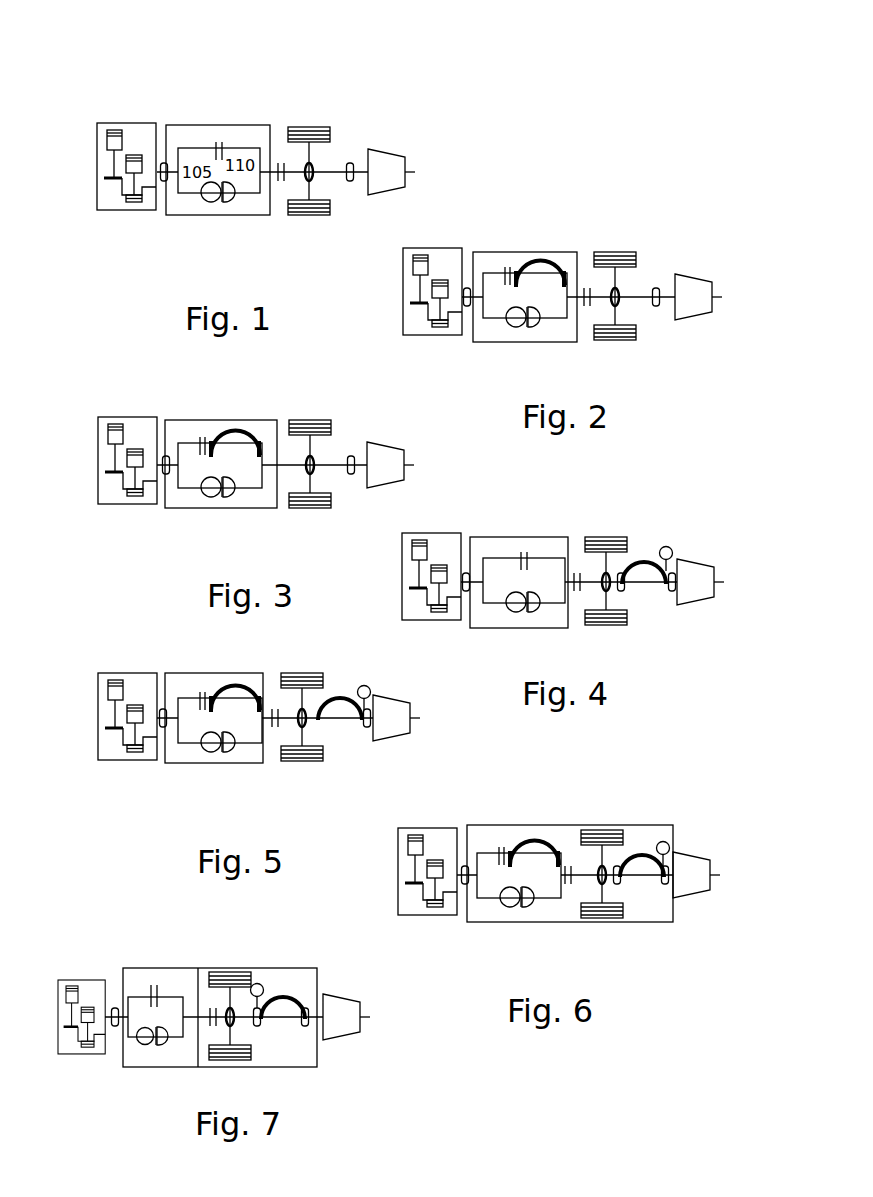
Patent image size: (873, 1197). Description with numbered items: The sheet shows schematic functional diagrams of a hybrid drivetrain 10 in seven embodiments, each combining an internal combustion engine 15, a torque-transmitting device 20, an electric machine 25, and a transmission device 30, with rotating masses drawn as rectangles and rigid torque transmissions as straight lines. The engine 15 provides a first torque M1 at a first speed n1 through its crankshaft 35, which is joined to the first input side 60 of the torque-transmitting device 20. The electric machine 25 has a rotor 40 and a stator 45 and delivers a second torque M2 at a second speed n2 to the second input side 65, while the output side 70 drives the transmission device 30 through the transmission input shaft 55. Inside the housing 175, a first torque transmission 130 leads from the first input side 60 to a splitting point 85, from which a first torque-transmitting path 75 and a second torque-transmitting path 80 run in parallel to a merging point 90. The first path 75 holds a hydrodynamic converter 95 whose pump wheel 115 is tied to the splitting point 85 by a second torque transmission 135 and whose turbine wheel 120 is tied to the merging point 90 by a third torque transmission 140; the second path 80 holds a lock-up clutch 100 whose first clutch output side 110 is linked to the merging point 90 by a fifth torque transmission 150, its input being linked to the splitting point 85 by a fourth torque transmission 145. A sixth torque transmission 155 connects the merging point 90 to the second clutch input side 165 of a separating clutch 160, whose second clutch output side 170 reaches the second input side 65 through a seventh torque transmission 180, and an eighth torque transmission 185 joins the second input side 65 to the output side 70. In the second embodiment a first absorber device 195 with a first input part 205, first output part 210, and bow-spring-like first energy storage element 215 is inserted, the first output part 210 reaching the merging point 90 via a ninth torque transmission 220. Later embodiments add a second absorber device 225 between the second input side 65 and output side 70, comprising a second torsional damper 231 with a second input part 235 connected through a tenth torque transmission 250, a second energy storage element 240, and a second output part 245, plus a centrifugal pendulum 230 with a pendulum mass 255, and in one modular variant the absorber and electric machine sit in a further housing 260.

In FIG. 1, the drivetrain 10 is at (443, 98).
In FIG. 2, the drivetrain 10 is at (648, 348).
In FIG. 3, the drivetrain 10 is at (92, 410).
In FIG. 4, the drivetrain 10 is at (724, 606).
In FIG. 5, the drivetrain 10 is at (110, 665).
In FIG. 6, the drivetrain 10 is at (698, 907).
In FIG. 7, the drivetrain 10 is at (376, 1002).
In FIG. 1, the internal combustion engine 15 is at (112, 118).
In FIG. 2, the internal combustion engine 15 is at (430, 335).
In FIG. 3, the internal combustion engine 15 is at (122, 505).
In FIG. 4, the internal combustion engine 15 is at (431, 576).
In FIG. 5, the internal combustion engine 15 is at (118, 757).
In FIG. 6, the internal combustion engine 15 is at (424, 913).
In FIG. 7, the internal combustion engine 15 is at (92, 1053).
In FIG. 1, the torque-transmitting device 20 is at (223, 128).
In FIG. 2, the torque-transmitting device 20 is at (525, 297).
In FIG. 3, the torque-transmitting device 20 is at (187, 512).
In FIG. 4, the torque-transmitting device 20 is at (520, 527).
In FIG. 5, the torque-transmitting device 20 is at (183, 780).
In FIG. 6, the torque-transmitting device 20 is at (530, 928).
In FIG. 1, the electric machine 25 is at (332, 122).
In FIG. 2, the electric machine 25 is at (643, 276).
In FIG. 3, the electric machine 25 is at (332, 520).
In FIG. 4, the electric machine 25 is at (593, 527).
In FIG. 5, the electric machine 25 is at (315, 773).
In FIG. 6, the electric machine 25 is at (617, 928).
In FIG. 1, the transmission device 30 is at (396, 137).
In FIG. 2, the transmission device 30 is at (698, 297).
In FIG. 3, the transmission device 30 is at (390, 440).
In FIG. 4, the transmission device 30 is at (700, 582).
In FIG. 5, the transmission device 30 is at (396, 718).
In FIG. 6, the transmission device 30 is at (717, 883).
In FIG. 7, the transmission device 30 is at (364, 1037).
In FIG. 1, the crankshaft 35 is at (149, 208).
In FIG. 1, the rotor 40 is at (313, 202).
In FIG. 7, the rotor 40 is at (252, 1055).
In FIG. 1, the stator 45 is at (312, 212).
In FIG. 1, the transmission input shaft 55 is at (356, 166).
In FIG. 1, the first input side 60 is at (165, 182).
In FIG. 2, the first input side 60 is at (466, 306).
In FIG. 3, the first input side 60 is at (165, 475).
In FIG. 4, the first input side 60 is at (468, 592).
In FIG. 5, the first input side 60 is at (162, 728).
In FIG. 6, the first input side 60 is at (465, 875).
In FIG. 1, the second input side 65 is at (315, 166).
In FIG. 2, the second input side 65 is at (625, 302).
In FIG. 3, the second input side 65 is at (313, 460).
In FIG. 4, the second input side 65 is at (578, 592).
In FIG. 5, the second input side 65 is at (306, 710).
In FIG. 6, the second input side 65 is at (606, 868).
In FIG. 7, the second input side 65 is at (213, 1030).
In FIG. 1, the output side 70 is at (353, 182).
In FIG. 2, the output side 70 is at (658, 289).
In FIG. 3, the output side 70 is at (352, 478).
In FIG. 5, the output side 70 is at (368, 730).
In FIG. 6, the output side 70 is at (669, 844).
In FIG. 7, the output side 70 is at (306, 1012).
In FIG. 1, the first torque-transmitting path 75 is at (263, 196).
In FIG. 1, the second torque-transmitting path 80 is at (232, 146).
In FIG. 2, the second torque-transmitting path 80 is at (570, 285).
In FIG. 1, the splitting point 85 is at (183, 147).
In FIG. 1, the merging point 90 is at (285, 163).
In FIG. 2, the merging point 90 is at (562, 326).
In FIG. 1, the hydrodynamic converter 95 is at (210, 200).
In FIG. 1, the lock-up clutch 100 is at (221, 143).
In FIG. 2, the lock-up clutch 100 is at (505, 266).
In FIG. 2, the first clutch output side 110 is at (530, 275).
In FIG. 1, the pump wheel 115 is at (213, 202).
In FIG. 1, the turbine wheel 120 is at (232, 196).
In FIG. 1, the first torque transmission 130 is at (172, 170).
In FIG. 1, the second torque transmission 135 is at (197, 192).
In FIG. 1, the third torque transmission 140 is at (252, 198).
In FIG. 1, the fourth torque transmission 145 is at (210, 118).
In FIG. 1, the fifth torque transmission 150 is at (256, 163).
In FIG. 2, the fifth torque transmission 150 is at (492, 318).
In FIG. 1, the sixth torque transmission 155 is at (273, 185).
In FIG. 1, the separating clutch 160 is at (291, 183).
In FIG. 2, the separating clutch 160 is at (588, 314).
In FIG. 3, the separating clutch 160 is at (268, 480).
In FIG. 6, the separating clutch 160 is at (572, 892).
In FIG. 1, the second clutch input side 165 is at (266, 170).
In FIG. 1, the second clutch output side 170 is at (312, 125).
In FIG. 1, the housing 175 is at (226, 202).
In FIG. 3, the housing 175 is at (235, 497).
In FIG. 6, the housing 175 is at (502, 922).
In FIG. 1, the seventh torque transmission 180 is at (303, 210).
In FIG. 1, the eighth torque transmission 185 is at (326, 204).
In FIG. 2, the first absorber device 195 is at (548, 252).
In FIG. 5, the first absorber device 195 is at (237, 695).
In FIG. 2, the first input part 205 is at (515, 322).
In FIG. 2, the first output part 210 is at (543, 278).
In FIG. 2, the first energy storage element 215 is at (535, 326).
In FIG. 3, the first energy storage element 215 is at (235, 445).
In FIG. 2, the ninth torque transmission 220 is at (612, 252).
In FIG. 5, the second absorber device 225 is at (343, 723).
In FIG. 6, the second absorber device 225 is at (642, 877).
In FIG. 4, the centrifugal pendulum 230 is at (686, 532).
In FIG. 7, the centrifugal pendulum 230 is at (251, 985).
In FIG. 4, the second torsional damper 231 is at (643, 556).
In FIG. 4, the second input part 235 is at (645, 582).
In FIG. 7, the second input part 235 is at (275, 1022).
In FIG. 4, the second energy storage element 240 is at (627, 592).
In FIG. 4, the second output part 245 is at (675, 592).
In FIG. 7, the second output part 245 is at (322, 1040).
In FIG. 4, the tenth torque transmission 250 is at (612, 540).
In FIG. 4, the pendulum mass 255 is at (669, 545).
In FIG. 6, the further housing 260 is at (668, 885).
In FIG. 7, the further housing 260 is at (308, 1028).
In FIG. 1, the first torque M1 is at (161, 163).
In FIG. 2, the first torque M1 is at (467, 286).
In FIG. 4, the first torque M1 is at (467, 571).
In FIG. 5, the first torque M1 is at (163, 708).
In FIG. 1, the first speed n1 is at (158, 75).
In FIG. 1, the second torque M2 is at (318, 125).
In FIG. 1, the second speed n2 is at (330, 122).